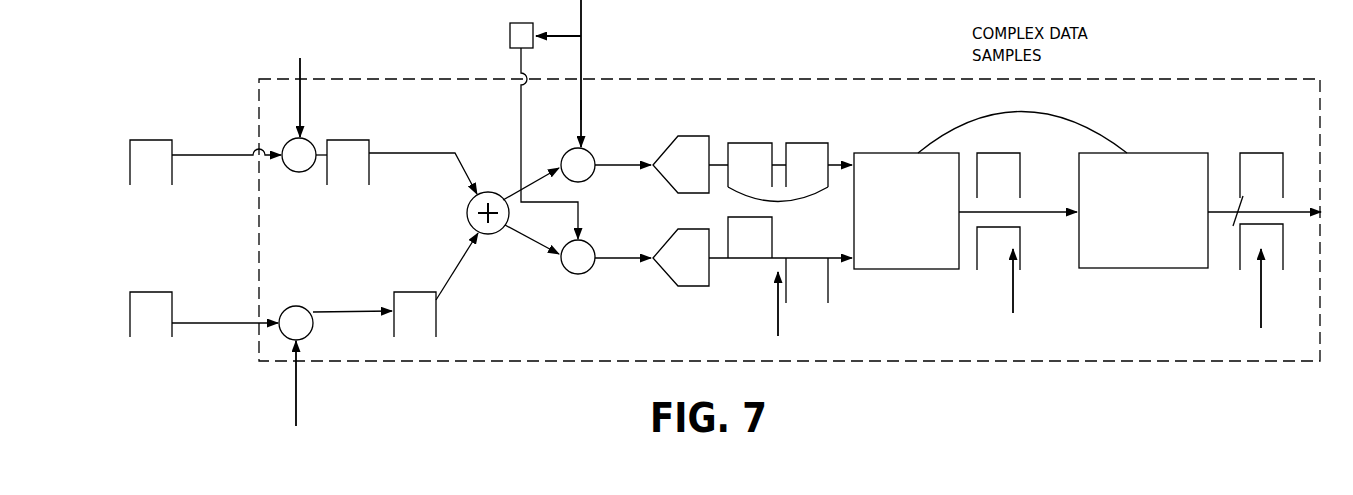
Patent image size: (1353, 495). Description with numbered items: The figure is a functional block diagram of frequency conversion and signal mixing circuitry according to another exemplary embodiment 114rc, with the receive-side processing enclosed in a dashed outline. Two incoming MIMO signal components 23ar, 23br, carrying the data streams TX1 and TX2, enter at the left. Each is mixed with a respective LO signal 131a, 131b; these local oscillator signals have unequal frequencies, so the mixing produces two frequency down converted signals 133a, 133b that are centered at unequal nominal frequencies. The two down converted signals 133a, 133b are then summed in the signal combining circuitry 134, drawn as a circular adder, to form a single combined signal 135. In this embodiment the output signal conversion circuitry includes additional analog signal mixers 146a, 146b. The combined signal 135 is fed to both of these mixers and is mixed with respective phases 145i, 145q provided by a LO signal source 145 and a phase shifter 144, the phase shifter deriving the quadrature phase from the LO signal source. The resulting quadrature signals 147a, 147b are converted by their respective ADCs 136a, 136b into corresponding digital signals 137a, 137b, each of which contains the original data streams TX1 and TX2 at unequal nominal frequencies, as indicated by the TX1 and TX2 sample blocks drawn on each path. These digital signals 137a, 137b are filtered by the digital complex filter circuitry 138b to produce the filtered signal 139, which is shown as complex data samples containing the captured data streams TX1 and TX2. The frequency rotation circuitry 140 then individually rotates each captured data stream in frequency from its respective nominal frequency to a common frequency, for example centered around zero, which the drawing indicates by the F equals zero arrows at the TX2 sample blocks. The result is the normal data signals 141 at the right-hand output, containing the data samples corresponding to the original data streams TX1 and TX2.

The exemplary embodiment 114rc is at (1244, 78).
The incoming MIMO signal component 23ar is at (147, 138).
The incoming MIMO signal component 23br is at (147, 290).
The LO signal 131a is at (298, 73).
The LO signal 131b is at (293, 395).
The frequency down converted signal 133a is at (371, 145).
The frequency down converted signal 133b is at (384, 298).
The signal combining circuitry 134 is at (490, 190).
The combined signal 135 is at (510, 215).
The phase shifter 144 is at (509, 30).
The LO signal source 145 is at (580, 12).
The phase 145i is at (583, 45).
The phase 145q is at (519, 70).
The analog signal mixer 146a is at (592, 152).
The analog signal mixer 146b is at (566, 271).
The quadrature signal 147a is at (616, 161).
The quadrature signal 147b is at (614, 259).
The ADC 136a is at (672, 184).
The ADC 136b is at (670, 238).
The digital signal 137a is at (805, 201).
The digital signal 137b is at (828, 306).
The complex filter circuitry 138b is at (913, 271).
The filtered signal 139 is at (1007, 89).
The frequency rotation circuitry 140 is at (1138, 270).
The normal data signals 141 is at (1224, 212).